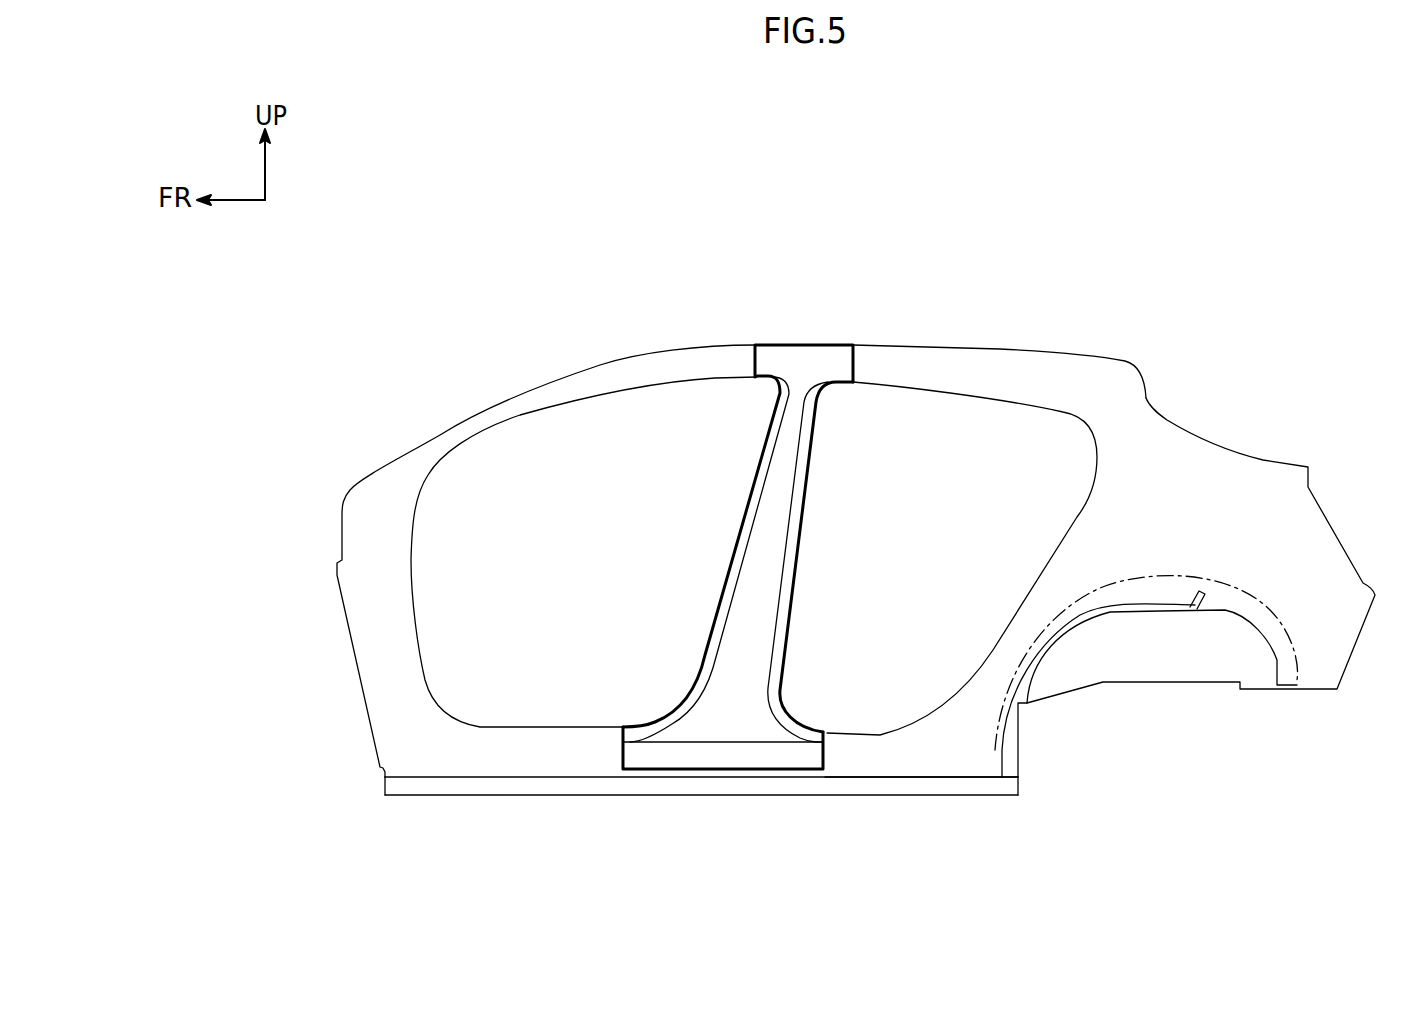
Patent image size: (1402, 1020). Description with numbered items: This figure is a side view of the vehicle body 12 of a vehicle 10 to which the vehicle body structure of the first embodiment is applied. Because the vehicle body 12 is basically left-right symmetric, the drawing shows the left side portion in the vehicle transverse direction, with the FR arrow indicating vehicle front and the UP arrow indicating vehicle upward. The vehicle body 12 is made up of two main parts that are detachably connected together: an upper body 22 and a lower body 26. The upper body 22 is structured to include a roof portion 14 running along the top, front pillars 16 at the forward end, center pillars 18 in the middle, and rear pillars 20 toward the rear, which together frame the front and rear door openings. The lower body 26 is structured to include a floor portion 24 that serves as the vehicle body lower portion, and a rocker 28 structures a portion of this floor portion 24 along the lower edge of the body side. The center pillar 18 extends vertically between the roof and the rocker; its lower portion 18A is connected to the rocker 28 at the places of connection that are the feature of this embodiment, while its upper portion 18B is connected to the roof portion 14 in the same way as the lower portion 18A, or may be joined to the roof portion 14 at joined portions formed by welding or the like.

The vehicle 10 is at (856, 429).
The vehicle body 12 is at (856, 429).
The roof portion 14 is at (963, 346).
The front pillars 16 is at (420, 573).
The center pillars 18 is at (776, 563).
The lower portion 18A is at (697, 753).
The upper portion 18B is at (793, 347).
The rear pillars 20 is at (1078, 512).
The upper body 22 is at (652, 330).
The floor portion 24 is at (845, 770).
The lower body 26 is at (701, 859).
The rocker 28 is at (777, 800).